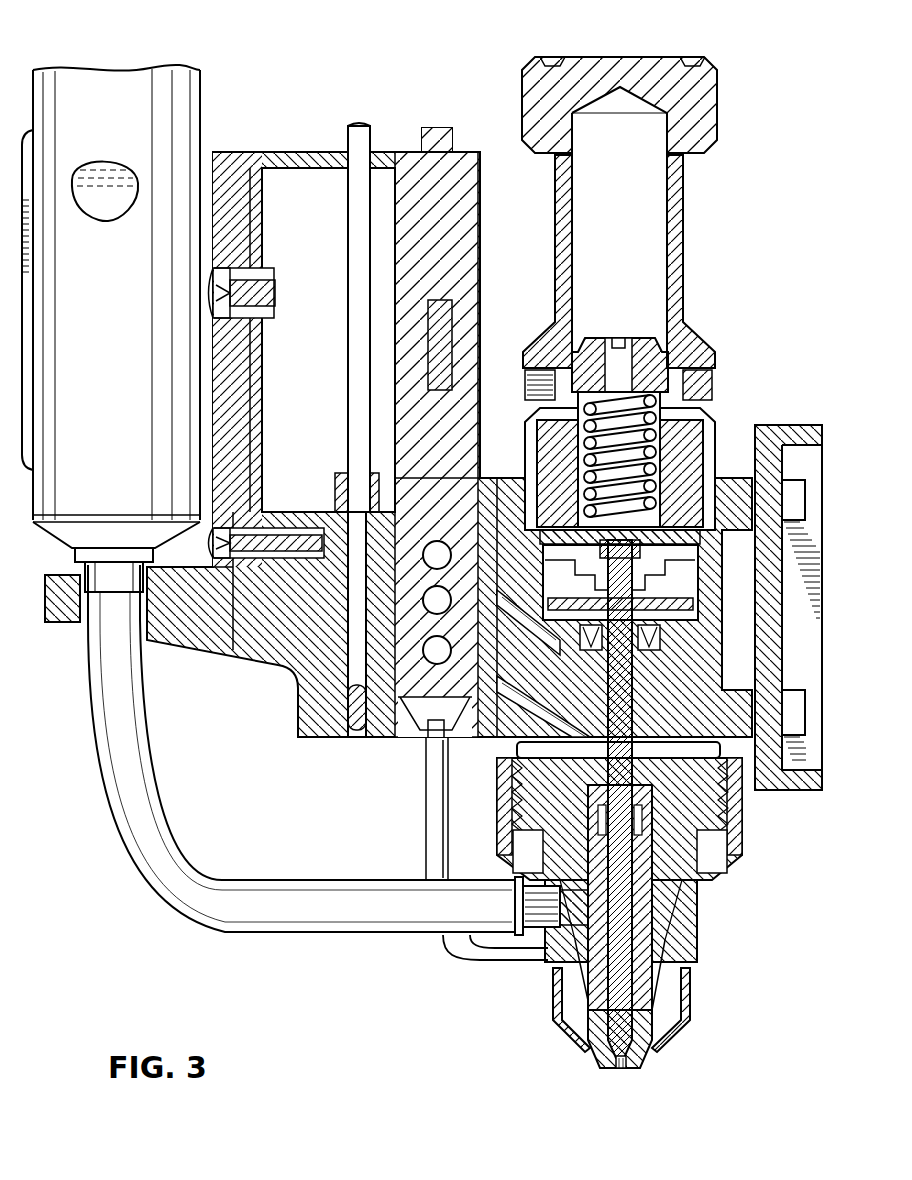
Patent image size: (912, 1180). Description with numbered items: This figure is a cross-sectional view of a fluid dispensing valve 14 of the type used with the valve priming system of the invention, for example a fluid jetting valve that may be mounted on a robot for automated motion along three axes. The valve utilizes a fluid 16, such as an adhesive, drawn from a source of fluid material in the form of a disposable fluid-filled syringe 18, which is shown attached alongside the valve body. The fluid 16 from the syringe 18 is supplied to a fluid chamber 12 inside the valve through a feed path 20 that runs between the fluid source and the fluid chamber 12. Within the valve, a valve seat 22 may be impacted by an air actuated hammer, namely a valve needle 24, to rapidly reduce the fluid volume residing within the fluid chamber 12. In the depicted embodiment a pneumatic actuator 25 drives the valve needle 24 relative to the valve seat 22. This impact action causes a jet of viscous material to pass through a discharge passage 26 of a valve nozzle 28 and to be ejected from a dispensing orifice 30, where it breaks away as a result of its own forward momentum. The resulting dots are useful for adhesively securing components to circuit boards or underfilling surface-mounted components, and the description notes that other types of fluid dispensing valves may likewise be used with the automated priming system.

The fluid chamber 12 is at (623, 844).
The fluid dispensing valve 14 is at (484, 489).
The fluid 16 is at (103, 221).
The fluid-filled syringe 18 is at (203, 98).
The feed path 20 is at (128, 870).
The valve seat 22 is at (576, 1006).
The valve needle 24 is at (635, 978).
The pneumatic actuator 25 is at (684, 568).
The discharge passage 26 is at (648, 1068).
The valve nozzle 28 is at (598, 1066).
The dispensing orifice 30 is at (621, 1072).